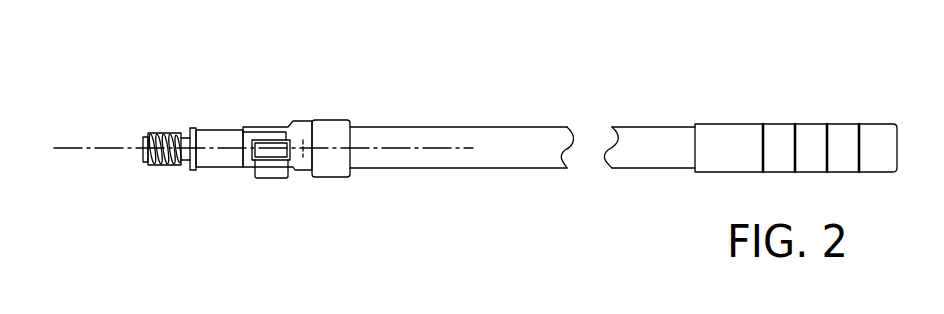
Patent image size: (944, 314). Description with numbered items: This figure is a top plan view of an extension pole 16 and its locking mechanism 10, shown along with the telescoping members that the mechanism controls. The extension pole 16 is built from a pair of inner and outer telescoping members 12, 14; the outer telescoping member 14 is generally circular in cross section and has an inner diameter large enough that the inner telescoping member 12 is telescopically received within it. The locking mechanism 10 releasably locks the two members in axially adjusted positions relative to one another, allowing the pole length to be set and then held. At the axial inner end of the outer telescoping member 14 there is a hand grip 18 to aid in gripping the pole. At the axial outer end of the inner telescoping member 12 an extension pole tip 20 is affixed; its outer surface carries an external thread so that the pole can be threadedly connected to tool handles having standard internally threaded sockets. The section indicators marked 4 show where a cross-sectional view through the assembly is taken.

The section line 4- 4 is at (54, 148).
The locking mechanism 10 is at (270, 192).
The inner telescoping member 12 is at (212, 130).
The outer telescoping member 14 is at (522, 135).
The extension pole 16 is at (590, 93).
The hand grip 18 is at (807, 123).
The extension pole tip 20 is at (162, 177).